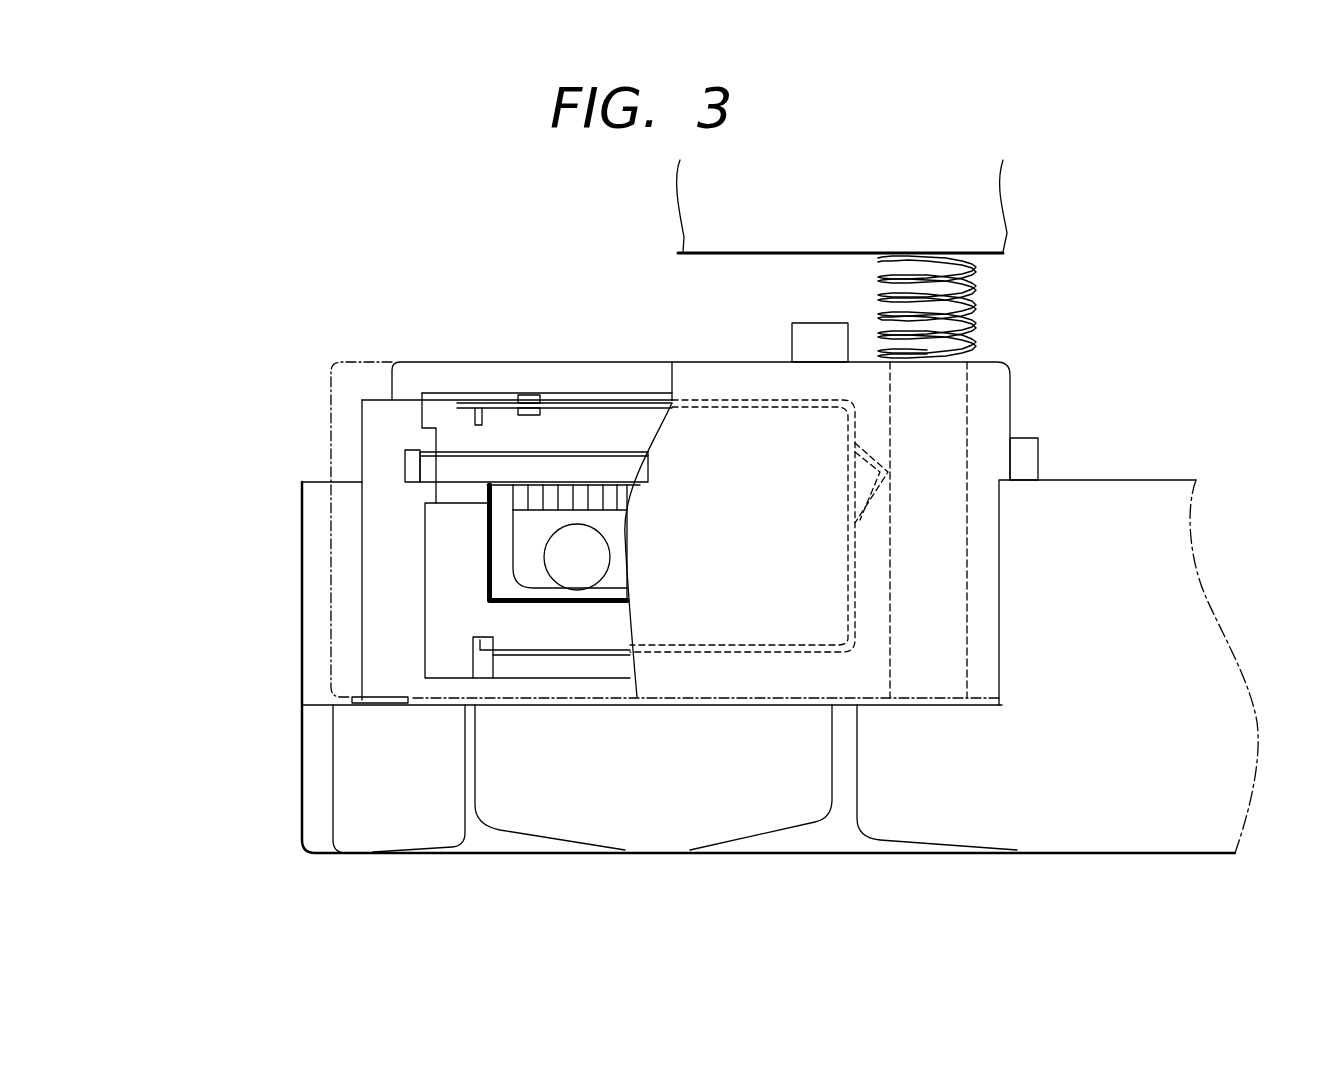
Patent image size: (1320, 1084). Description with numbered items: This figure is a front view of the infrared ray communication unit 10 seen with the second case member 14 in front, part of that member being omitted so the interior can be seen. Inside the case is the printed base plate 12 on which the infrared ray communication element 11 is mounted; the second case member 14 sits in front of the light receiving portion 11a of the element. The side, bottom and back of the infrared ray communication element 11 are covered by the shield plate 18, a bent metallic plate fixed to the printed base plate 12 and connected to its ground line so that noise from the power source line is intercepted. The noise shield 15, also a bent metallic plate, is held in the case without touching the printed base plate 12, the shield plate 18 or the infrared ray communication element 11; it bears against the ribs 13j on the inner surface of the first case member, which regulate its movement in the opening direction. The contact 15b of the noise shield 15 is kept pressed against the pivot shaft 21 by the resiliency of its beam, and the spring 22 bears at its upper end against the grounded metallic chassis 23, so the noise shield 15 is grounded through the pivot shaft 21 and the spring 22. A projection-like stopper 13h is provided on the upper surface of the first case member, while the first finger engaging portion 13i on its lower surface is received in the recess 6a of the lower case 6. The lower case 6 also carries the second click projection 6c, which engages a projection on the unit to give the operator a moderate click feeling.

The infrared ray communication unit 10 is at (377, 329).
The metallic chassis 23 is at (985, 193).
The spring 22 is at (982, 310).
The stopper 13h is at (790, 345).
The second case member 14 is at (997, 383).
The pivot shaft 21 is at (957, 429).
The contact 15b is at (873, 500).
The printed base plate 12 is at (437, 463).
The shield plate 18 is at (480, 503).
The infrared ray communication element 11 is at (525, 527).
The light receiving portion 11a is at (557, 562).
The noise shield 15 is at (525, 648).
The ribs 13j is at (528, 398).
The first finger engaging portion 13i is at (722, 808).
The lower case 6 is at (1152, 820).
The second click projection 6c is at (417, 693).
The recess 6a is at (838, 833).